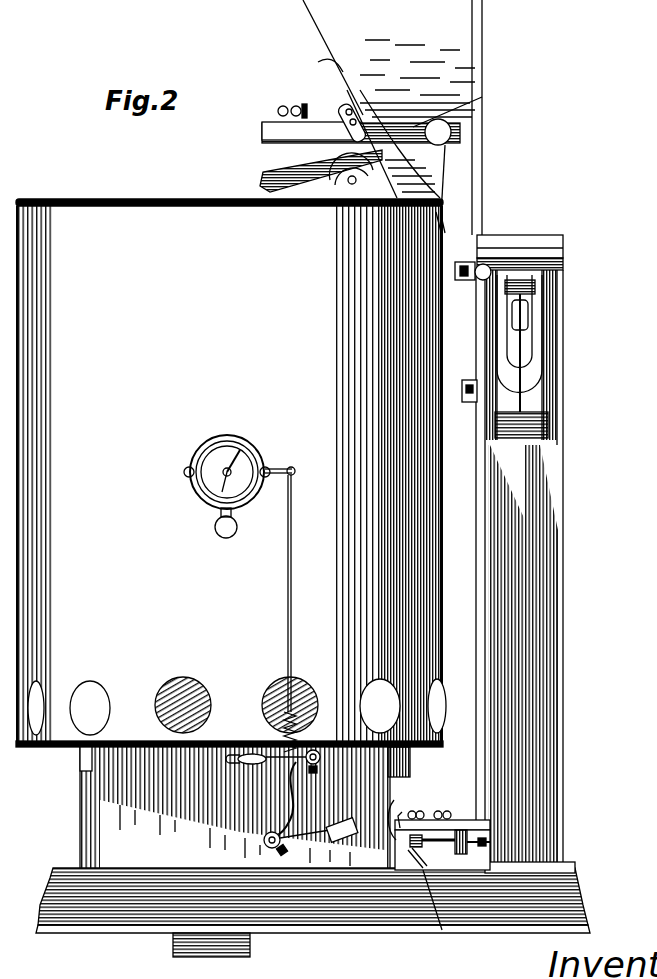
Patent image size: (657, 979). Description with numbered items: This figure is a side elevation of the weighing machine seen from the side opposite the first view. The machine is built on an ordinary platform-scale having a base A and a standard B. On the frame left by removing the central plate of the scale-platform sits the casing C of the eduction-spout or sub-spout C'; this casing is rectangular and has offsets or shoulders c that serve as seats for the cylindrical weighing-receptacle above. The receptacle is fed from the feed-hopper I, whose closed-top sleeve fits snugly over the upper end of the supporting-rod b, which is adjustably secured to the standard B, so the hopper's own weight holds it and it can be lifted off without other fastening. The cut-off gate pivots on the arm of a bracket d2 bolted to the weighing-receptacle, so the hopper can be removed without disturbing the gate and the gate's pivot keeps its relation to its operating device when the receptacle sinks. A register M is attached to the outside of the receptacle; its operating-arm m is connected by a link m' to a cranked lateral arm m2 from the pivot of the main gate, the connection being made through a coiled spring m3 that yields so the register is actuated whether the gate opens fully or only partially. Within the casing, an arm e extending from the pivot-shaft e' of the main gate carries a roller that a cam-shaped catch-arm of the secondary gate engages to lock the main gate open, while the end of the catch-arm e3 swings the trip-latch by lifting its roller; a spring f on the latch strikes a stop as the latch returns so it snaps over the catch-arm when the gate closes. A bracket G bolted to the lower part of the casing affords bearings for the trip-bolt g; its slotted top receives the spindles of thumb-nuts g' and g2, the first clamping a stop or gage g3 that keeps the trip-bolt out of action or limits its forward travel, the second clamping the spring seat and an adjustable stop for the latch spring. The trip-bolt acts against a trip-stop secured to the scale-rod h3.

The feed-hopper I is at (392, 63).
The supporting-rod b is at (483, 203).
The bracket d2 is at (379, 128).
The scale-rod h3 is at (446, 234).
The register M is at (227, 475).
The operating-arm m is at (292, 472).
The link m' is at (302, 593).
The cranked lateral arm m2 is at (300, 740).
The coiled spring m3 is at (260, 742).
The casing C is at (235, 807).
The offsets or shoulders c is at (78, 762).
The arm e is at (281, 771).
The pivot-shaft e' is at (326, 765).
The catch-arm e3 is at (311, 809).
The base A is at (313, 900).
The sub-spout C' is at (226, 948).
The standard B is at (510, 570).
The bracket G is at (442, 837).
The trip-bolt g is at (486, 832).
The stop or gage g3 is at (440, 855).
The spring f is at (399, 814).
The thumb-nut g2 is at (425, 802).
The thumb-nut g' is at (452, 803).